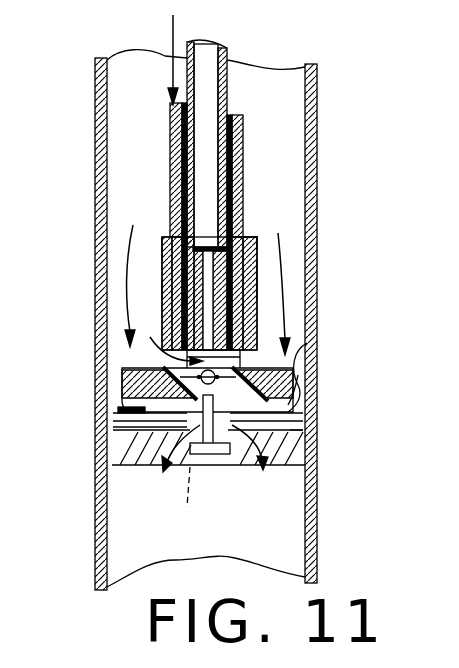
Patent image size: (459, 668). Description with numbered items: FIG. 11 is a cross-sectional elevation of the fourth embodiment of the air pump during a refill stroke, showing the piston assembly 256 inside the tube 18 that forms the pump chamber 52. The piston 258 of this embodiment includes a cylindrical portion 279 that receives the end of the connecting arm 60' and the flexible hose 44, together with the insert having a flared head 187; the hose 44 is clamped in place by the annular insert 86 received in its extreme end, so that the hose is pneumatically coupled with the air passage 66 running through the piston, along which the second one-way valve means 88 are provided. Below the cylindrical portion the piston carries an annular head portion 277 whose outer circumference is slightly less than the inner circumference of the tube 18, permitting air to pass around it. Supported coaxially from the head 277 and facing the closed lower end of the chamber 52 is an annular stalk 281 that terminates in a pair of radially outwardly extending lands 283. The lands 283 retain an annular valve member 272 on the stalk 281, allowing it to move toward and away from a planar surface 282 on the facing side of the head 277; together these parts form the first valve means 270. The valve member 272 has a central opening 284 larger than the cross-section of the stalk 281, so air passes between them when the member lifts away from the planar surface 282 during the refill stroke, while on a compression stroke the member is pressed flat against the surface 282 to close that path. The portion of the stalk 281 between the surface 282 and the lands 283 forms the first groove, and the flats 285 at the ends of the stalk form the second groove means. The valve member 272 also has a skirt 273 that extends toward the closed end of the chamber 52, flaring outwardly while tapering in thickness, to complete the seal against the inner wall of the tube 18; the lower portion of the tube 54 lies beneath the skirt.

The tube 18 is at (96, 212).
The air passage 66 is at (208, 58).
The flexible hose 44 is at (233, 97).
The connecting arm 60' is at (231, 170).
The piston assembly 256 is at (265, 287).
The piston 258 is at (261, 240).
The annular insert 86 is at (247, 314).
The flared head 187 is at (160, 239).
The cylindrical portion 279 is at (160, 285).
The second one-way valve means 88 is at (145, 286).
The first valve means 270 is at (262, 402).
The annular head portion 277 is at (312, 348).
The skirt 273 is at (113, 433).
The planar surface 282 is at (130, 420).
The annular stalk 281 is at (115, 427).
The annular valve member 272 is at (306, 438).
The flats 285 is at (166, 466).
The opening 284 is at (268, 462).
The lands 283 is at (186, 500).
The chamber 52 is at (293, 516).
The lower tube portion 54 is at (207, 560).